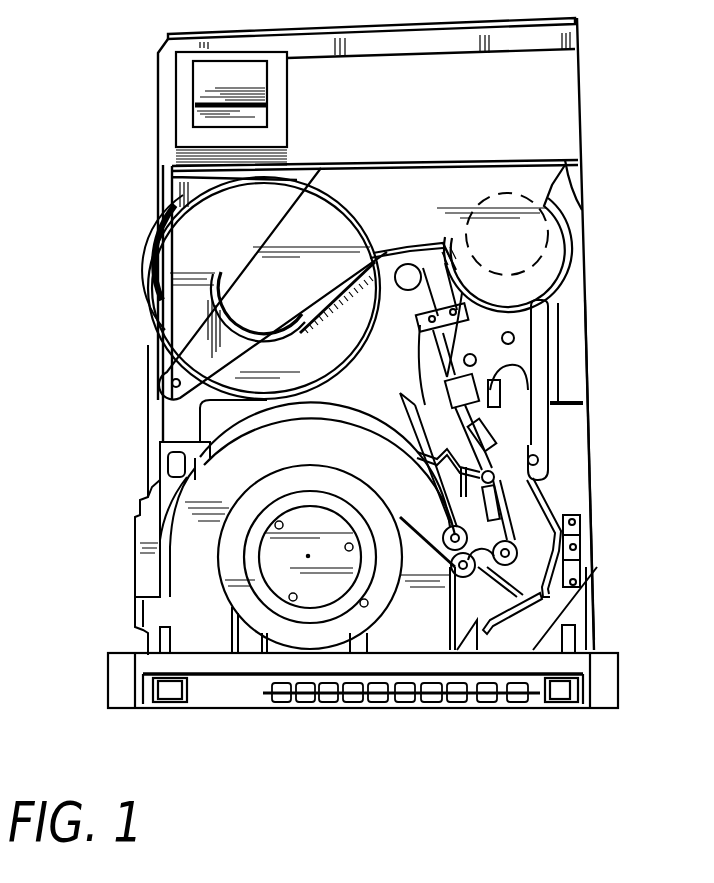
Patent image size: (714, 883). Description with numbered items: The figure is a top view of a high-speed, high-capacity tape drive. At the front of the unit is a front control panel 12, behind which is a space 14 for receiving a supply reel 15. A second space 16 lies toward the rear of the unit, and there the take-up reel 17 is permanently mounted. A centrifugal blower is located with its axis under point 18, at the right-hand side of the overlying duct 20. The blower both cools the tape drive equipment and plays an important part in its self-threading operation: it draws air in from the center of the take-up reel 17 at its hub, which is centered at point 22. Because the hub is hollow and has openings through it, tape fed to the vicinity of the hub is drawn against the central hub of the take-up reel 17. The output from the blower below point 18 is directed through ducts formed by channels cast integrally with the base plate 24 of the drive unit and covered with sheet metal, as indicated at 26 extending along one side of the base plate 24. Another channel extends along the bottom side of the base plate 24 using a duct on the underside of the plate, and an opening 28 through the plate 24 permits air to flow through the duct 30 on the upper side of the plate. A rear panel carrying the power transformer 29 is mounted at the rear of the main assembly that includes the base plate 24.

The front control panel 12 is at (540, 691).
The space for receiving a supply reel 14 is at (207, 593).
The supply reel 15 is at (312, 478).
The space to the rear of the unit 16 is at (193, 228).
The take-up reel 17 is at (190, 258).
The point under which the blower axis is located 18 is at (507, 235).
The overlying duct 20 is at (407, 188).
The point at the center of the take-up reel hub 22 is at (269, 283).
The base plate 24 is at (478, 332).
The sheet metal covering the duct channel 26 is at (578, 433).
The opening through the plate 28 is at (160, 466).
The power transformer 29 is at (205, 86).
The duct on the upper side of the plate 30 is at (147, 538).